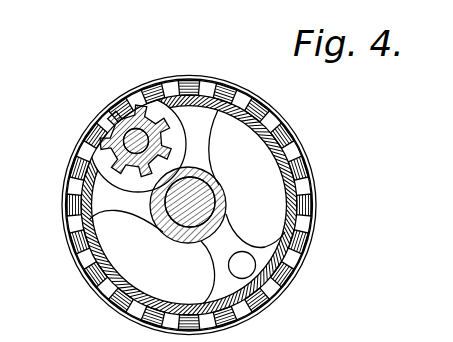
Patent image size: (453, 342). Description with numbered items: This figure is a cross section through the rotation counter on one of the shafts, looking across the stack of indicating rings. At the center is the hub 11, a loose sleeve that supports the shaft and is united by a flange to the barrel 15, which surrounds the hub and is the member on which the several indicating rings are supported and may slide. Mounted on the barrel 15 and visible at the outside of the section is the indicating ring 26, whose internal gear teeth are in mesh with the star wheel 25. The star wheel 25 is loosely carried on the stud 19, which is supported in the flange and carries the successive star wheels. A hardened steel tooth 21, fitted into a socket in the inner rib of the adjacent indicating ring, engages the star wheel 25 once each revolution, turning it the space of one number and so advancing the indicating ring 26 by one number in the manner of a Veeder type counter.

The hub 11 is at (218, 180).
The barrel 15 is at (286, 118).
The stud 19 is at (133, 106).
The hardened steel tooth 21 is at (198, 201).
The star wheel 25 is at (72, 158).
The indicating ring 26 is at (184, 82).